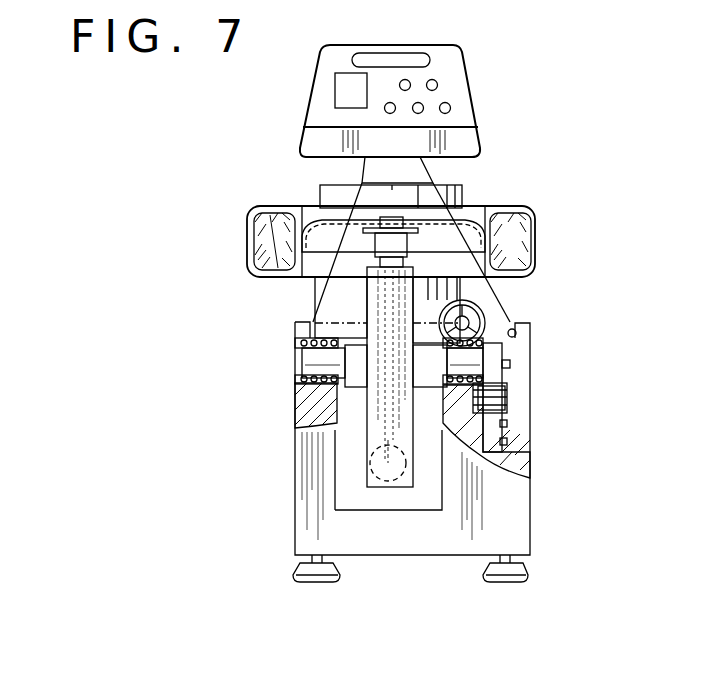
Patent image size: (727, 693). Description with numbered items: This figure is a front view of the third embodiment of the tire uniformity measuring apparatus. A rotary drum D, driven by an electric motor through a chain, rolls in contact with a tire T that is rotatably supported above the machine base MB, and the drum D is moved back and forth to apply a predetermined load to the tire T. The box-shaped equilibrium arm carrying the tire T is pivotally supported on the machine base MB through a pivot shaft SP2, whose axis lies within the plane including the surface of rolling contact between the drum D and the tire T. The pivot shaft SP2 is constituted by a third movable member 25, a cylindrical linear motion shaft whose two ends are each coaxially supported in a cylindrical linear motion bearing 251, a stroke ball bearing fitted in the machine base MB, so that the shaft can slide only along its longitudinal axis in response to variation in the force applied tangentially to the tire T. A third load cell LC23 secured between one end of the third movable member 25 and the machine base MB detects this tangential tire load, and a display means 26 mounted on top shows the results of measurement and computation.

The display means 26 is at (455, 45).
The rotary drum D is at (463, 192).
The tire T is at (535, 225).
The pivot shaft SP2 is at (302, 360).
The cylindrical linear motion bearing 251 is at (305, 382).
The third movable member 25 is at (475, 362).
The third load cell LC23 is at (507, 398).
The machine base MB is at (402, 533).